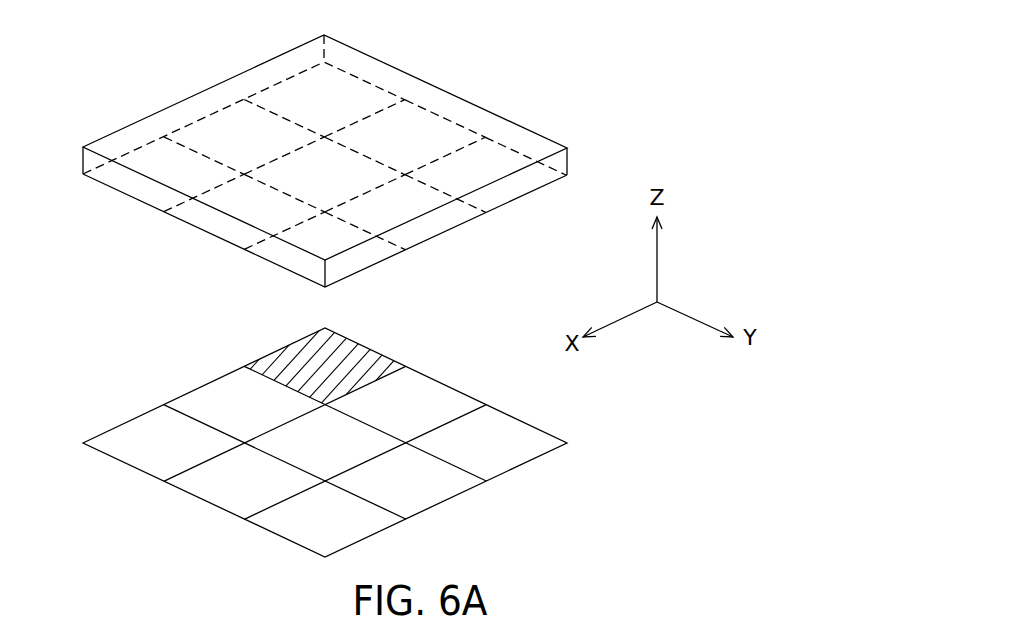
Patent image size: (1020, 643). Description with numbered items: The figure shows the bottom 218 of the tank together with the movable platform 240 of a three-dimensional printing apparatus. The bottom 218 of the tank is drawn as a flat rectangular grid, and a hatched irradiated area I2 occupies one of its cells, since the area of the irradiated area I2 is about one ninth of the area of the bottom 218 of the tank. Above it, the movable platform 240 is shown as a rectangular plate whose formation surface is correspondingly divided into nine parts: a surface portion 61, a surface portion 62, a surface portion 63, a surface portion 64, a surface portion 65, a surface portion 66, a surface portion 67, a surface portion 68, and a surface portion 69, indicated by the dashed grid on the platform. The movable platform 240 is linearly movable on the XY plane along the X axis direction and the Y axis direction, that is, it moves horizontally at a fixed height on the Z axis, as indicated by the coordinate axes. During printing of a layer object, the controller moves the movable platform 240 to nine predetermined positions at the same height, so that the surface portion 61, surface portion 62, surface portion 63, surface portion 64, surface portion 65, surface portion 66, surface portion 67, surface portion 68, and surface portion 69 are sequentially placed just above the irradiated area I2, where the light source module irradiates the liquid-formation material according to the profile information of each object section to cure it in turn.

The movable platform 240 is at (568, 160).
The surface portion 61 is at (497, 175).
The surface portion 62 is at (435, 213).
The surface portion 63 is at (333, 250).
The surface portion 64 is at (425, 128).
The surface portion 65 is at (232, 203).
The surface portion 66 is at (305, 90).
The surface portion 67 is at (223, 127).
The surface portion 68 is at (143, 163).
The surface portion 69 is at (328, 155).
The bottom of the tank 218 is at (340, 433).
The irradiated area I2 is at (287, 367).